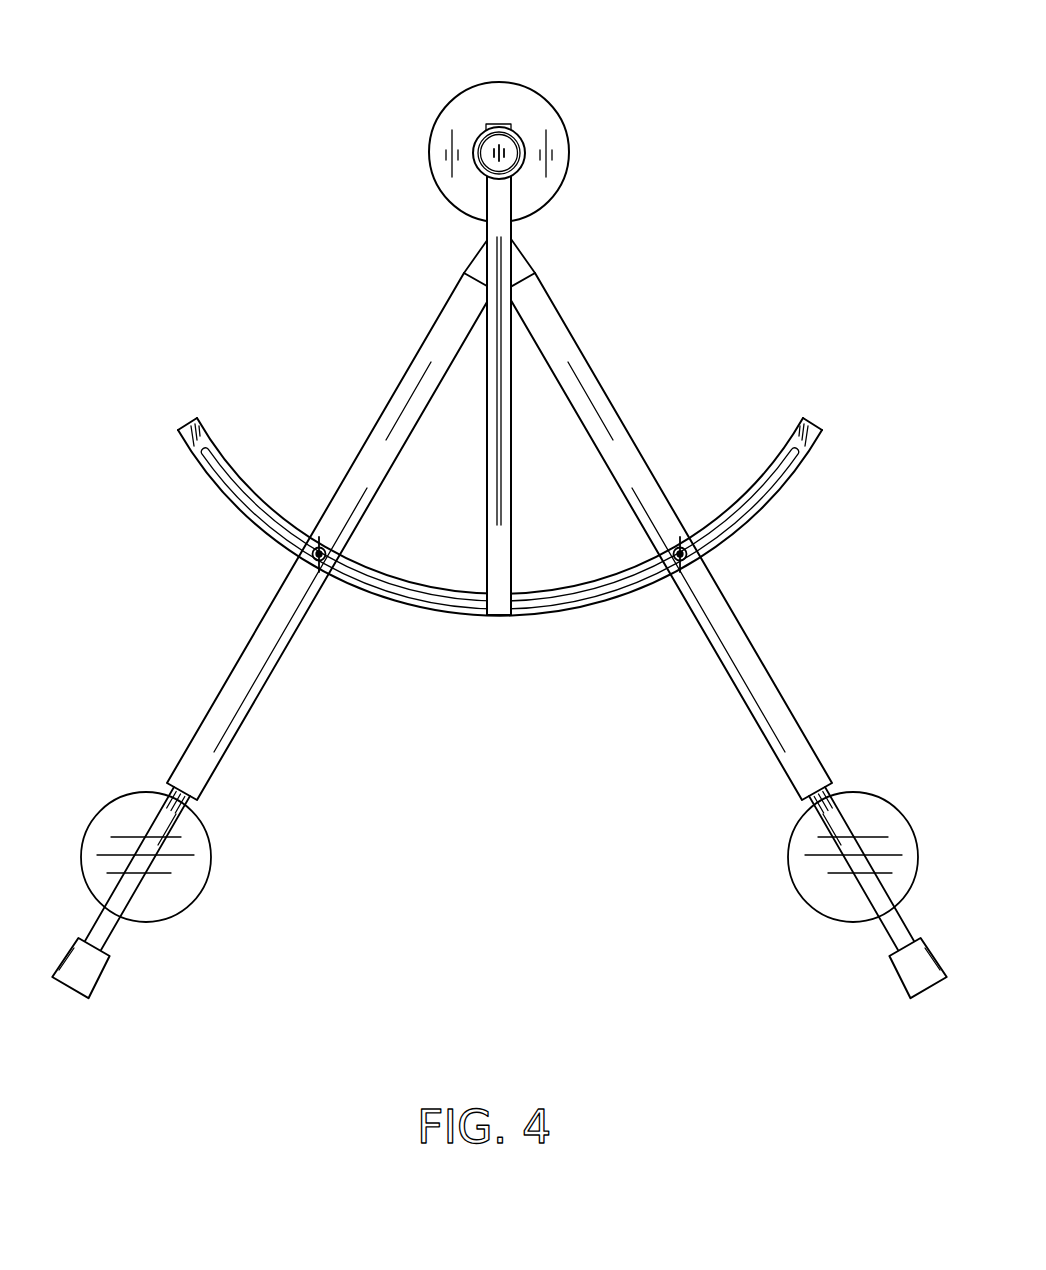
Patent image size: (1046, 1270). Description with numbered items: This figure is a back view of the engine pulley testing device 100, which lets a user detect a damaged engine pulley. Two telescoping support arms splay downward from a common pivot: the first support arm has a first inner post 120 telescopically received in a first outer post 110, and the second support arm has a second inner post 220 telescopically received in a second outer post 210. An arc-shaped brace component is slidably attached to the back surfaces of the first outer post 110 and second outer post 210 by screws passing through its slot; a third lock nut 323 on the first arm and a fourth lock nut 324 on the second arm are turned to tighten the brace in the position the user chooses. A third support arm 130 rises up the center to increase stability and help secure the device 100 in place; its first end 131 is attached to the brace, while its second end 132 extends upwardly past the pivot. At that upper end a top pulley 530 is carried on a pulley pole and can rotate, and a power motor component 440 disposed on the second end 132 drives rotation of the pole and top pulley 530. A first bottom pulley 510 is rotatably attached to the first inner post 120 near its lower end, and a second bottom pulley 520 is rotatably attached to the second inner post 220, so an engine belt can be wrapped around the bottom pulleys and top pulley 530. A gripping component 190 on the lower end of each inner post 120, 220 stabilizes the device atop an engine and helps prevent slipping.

The engine pulley testing device 100 is at (772, 253).
The first outer post 110 is at (773, 683).
The first inner post 120 is at (877, 931).
The third support arm 130 is at (513, 479).
The first end of third support arm 131 is at (497, 617).
The second end of third support arm 132 is at (512, 193).
The gripping component 190 is at (918, 999).
The second outer post 210 is at (380, 418).
The second inner post 220 is at (178, 826).
The third lock nut 323 is at (690, 553).
The fourth lock nut 324 is at (310, 553).
The power motor component 440 is at (503, 155).
The first bottom pulley 510 is at (807, 898).
The second bottom pulley 520 is at (198, 893).
The top pulley 530 is at (513, 93).